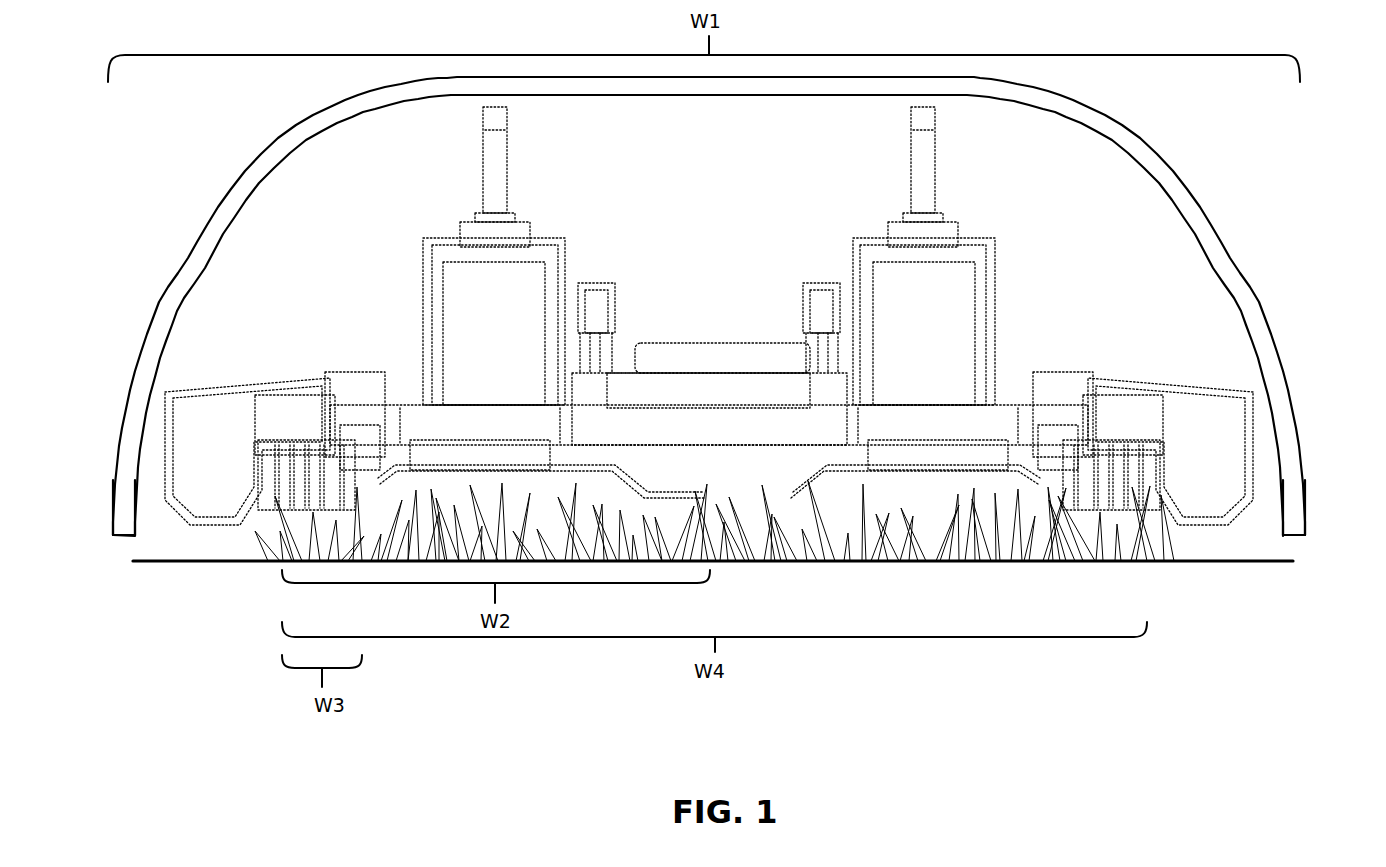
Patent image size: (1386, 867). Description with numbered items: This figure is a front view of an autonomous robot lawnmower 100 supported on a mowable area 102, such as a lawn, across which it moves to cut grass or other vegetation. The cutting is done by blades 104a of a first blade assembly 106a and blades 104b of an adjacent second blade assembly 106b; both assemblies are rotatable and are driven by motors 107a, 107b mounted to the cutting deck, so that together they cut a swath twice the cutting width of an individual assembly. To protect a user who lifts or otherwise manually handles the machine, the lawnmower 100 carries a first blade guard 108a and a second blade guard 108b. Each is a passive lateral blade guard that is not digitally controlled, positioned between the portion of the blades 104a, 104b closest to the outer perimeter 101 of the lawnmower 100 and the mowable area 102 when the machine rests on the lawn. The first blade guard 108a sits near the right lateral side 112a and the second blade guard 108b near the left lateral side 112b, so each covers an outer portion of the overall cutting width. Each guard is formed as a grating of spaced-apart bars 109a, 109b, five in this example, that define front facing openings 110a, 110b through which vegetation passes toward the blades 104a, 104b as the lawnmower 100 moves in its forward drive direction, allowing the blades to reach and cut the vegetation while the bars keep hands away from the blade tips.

The autonomous robot lawnmower 100 is at (1197, 203).
The outer perimeter 101 is at (115, 488).
The mowable area 102 is at (167, 562).
The blades 104a is at (668, 493).
The blades 104b is at (830, 480).
The blade assembly 106a is at (520, 493).
The second blade assembly 106b is at (935, 495).
The motor 107a is at (519, 256).
The motor 107b is at (899, 256).
The blade guard 108a is at (272, 492).
The second blade guard 108b is at (1145, 480).
The bars 109a is at (355, 470).
The bars 109b is at (1062, 470).
The front facing openings 110a is at (352, 470).
The front facing openings 110b is at (1072, 465).
The right lateral side 112a is at (130, 515).
The left lateral side 112b is at (1290, 512).